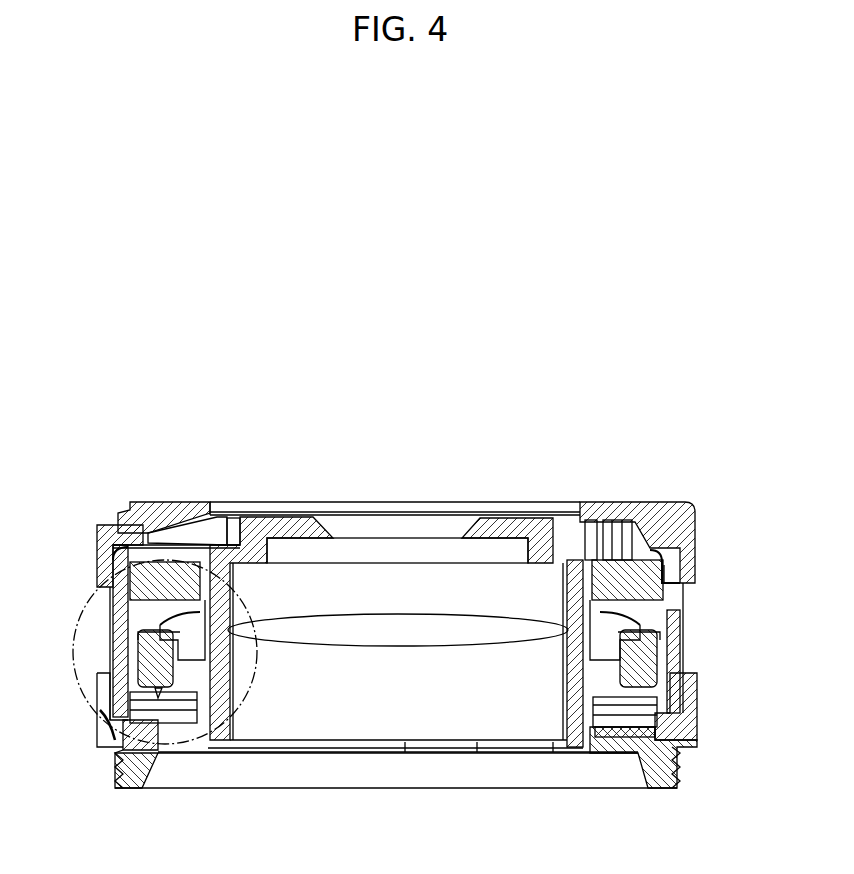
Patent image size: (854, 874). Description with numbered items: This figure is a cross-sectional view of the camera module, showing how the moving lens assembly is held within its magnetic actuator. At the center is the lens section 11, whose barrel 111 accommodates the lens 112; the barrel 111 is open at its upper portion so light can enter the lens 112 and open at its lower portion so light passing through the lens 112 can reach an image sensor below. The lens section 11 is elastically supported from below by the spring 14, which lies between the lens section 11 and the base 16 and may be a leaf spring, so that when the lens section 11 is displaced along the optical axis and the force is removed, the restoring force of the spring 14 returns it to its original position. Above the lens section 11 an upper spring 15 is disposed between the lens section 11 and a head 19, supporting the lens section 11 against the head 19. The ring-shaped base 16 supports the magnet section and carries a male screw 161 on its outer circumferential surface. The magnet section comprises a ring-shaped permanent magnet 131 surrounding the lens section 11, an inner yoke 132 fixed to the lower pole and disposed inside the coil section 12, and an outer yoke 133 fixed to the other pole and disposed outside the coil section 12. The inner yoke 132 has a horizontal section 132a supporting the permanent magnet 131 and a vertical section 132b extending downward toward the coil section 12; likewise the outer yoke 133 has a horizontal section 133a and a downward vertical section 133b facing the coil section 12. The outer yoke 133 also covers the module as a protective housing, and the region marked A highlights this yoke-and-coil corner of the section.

The lens section 11 is at (300, 528).
The head 19 is at (157, 505).
The upper spring 15 is at (122, 546).
The lens 112 is at (430, 613).
The barrel 111 is at (525, 530).
The permanent magnet 131 is at (613, 573).
The outer yoke 133 is at (770, 530).
The horizontal section 133a is at (653, 548).
The vertical section 133b is at (673, 580).
The inner yoke 132 is at (760, 598).
The horizontal section 132a is at (638, 610).
The vertical section 132b is at (655, 636).
The coil section 12 is at (645, 662).
The spring 14 is at (655, 728).
The base 16 is at (652, 765).
The male screw 161 is at (678, 780).
The detail region A is at (80, 690).